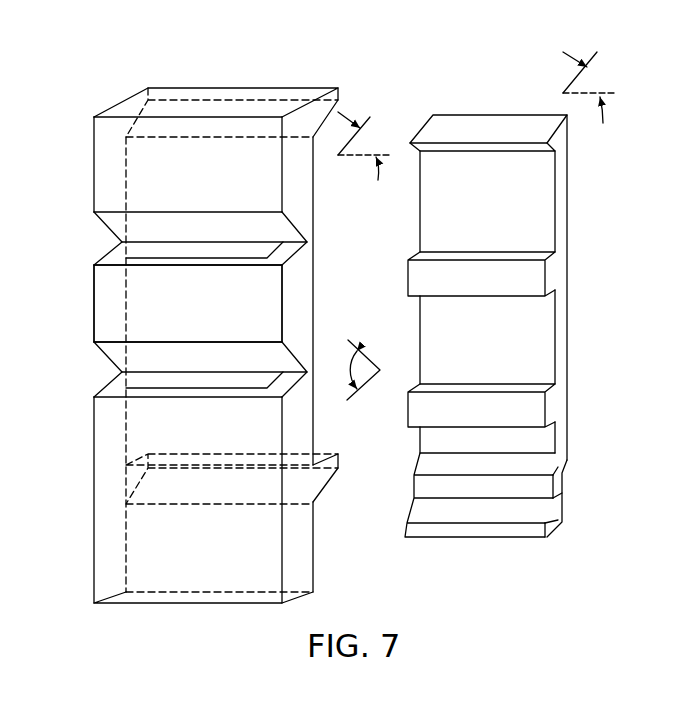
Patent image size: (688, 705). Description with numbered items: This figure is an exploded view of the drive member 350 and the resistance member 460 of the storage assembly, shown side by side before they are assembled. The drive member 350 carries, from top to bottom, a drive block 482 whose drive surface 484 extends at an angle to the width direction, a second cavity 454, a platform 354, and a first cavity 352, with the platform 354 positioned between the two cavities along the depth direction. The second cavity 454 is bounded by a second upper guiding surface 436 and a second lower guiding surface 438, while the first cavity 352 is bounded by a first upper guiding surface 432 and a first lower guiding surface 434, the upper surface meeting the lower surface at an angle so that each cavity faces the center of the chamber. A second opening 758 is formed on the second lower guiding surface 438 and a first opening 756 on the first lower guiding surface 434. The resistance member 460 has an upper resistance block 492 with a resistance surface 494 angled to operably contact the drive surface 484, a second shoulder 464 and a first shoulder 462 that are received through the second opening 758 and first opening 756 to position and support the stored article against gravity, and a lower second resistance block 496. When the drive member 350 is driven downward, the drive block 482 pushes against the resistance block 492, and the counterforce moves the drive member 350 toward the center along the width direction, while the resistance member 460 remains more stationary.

The drive member 350 is at (162, 62).
The drive block 482 is at (248, 92).
The drive surface 484 is at (338, 100).
The second upper guiding surface 436 is at (293, 223).
The second lower guiding surface 438 is at (297, 253).
The second cavity 454 is at (102, 235).
The second opening 758 is at (193, 252).
The platform 354 is at (220, 315).
The first cavity 352 is at (100, 372).
The first opening 756 is at (193, 383).
The first upper guiding surface 432 is at (288, 350).
The first lower guiding surface 434 is at (288, 390).
The resistance member 460 is at (507, 44).
The resistance surface 494 is at (488, 127).
The resistance block 492 is at (557, 138).
The second shoulder 464 is at (495, 288).
The first shoulder 462 is at (495, 420).
The second resistance block 496 is at (472, 510).